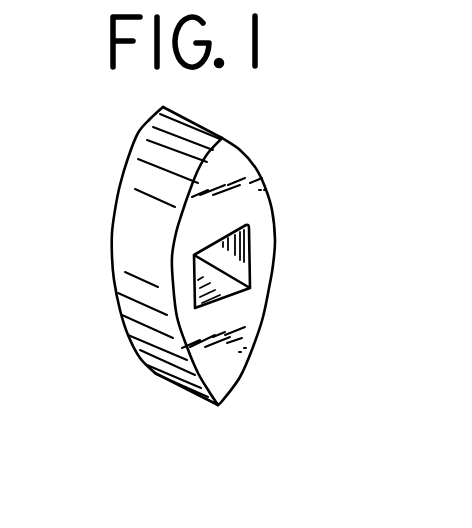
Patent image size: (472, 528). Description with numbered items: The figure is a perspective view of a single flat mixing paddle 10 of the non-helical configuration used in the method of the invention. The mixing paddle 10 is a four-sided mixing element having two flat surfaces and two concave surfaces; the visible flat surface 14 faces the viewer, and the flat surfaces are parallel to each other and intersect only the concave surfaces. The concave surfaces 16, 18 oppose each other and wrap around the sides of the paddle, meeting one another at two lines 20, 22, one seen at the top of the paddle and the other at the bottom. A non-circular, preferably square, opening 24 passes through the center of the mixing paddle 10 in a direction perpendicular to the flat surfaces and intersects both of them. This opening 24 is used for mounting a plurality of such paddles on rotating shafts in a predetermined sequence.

The mixing paddle 10 is at (284, 168).
The flat surface 14 is at (250, 199).
The concave surface 16 is at (130, 220).
The concave surface 18 is at (258, 327).
The line 20 is at (209, 133).
The line 22 is at (173, 382).
The non-circular opening 24 is at (237, 260).